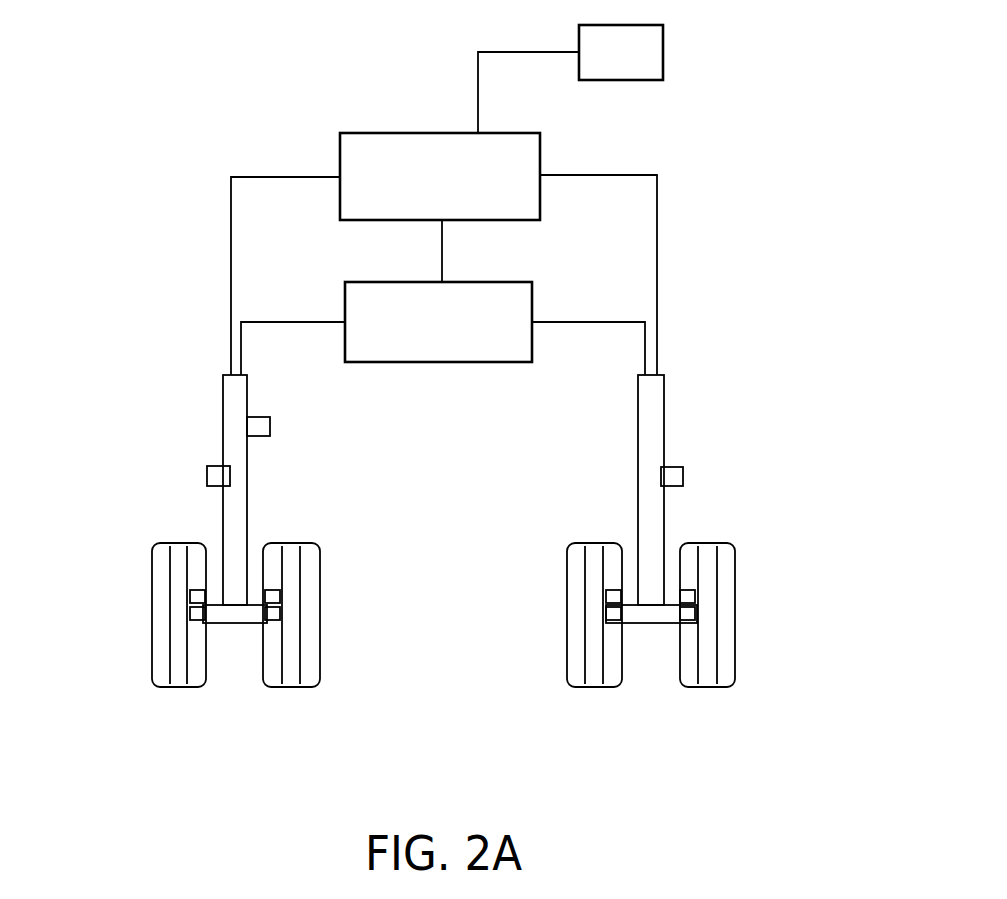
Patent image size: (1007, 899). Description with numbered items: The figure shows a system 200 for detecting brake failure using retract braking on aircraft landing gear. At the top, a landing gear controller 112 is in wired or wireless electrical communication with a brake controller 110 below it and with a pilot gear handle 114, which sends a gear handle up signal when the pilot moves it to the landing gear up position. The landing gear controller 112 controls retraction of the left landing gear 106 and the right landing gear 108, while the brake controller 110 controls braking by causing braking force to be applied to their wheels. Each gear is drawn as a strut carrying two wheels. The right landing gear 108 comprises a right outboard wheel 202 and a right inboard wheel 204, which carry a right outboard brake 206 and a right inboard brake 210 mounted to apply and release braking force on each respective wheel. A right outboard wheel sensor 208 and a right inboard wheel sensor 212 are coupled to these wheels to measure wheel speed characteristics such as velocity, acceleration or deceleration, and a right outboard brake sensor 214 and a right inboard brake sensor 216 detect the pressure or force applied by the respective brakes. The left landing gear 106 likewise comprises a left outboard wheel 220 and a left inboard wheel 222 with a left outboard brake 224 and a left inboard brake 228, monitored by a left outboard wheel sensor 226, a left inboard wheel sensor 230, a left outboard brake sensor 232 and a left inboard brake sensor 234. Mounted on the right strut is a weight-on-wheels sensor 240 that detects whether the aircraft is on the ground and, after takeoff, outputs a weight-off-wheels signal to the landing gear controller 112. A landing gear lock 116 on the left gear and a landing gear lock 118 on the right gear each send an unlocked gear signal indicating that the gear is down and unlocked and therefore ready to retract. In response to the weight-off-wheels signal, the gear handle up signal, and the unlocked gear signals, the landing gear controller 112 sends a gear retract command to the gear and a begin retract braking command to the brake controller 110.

The system 200 is at (228, 82).
The pilot gear handle 114 is at (621, 52).
The landing gear controller 112 is at (385, 134).
The brake controller 110 is at (448, 363).
The right landing gear 108 is at (104, 427).
The left landing gear 106 is at (793, 411).
The landing gear lock 118 is at (212, 476).
The landing gear lock 116 is at (683, 478).
The weight-on-wheels sensor 240 is at (270, 428).
The right outboard wheel 202 is at (152, 682).
The right inboard wheel 204 is at (320, 682).
The right outboard brake 206 is at (208, 623).
The right inboard brake 210 is at (262, 623).
The right outboard wheel sensor 208 is at (190, 597).
The right inboard wheel sensor 212 is at (282, 597).
The right outboard brake sensor 214 is at (190, 613).
The right inboard brake sensor 216 is at (280, 613).
The left outboard wheel 220 is at (735, 682).
The left inboard wheel 222 is at (567, 682).
The left inboard brake 228 is at (622, 623).
The left outboard brake 224 is at (672, 623).
The left outboard wheel sensor 226 is at (695, 597).
The left inboard wheel sensor 230 is at (606, 597).
The left outboard brake sensor 232 is at (695, 613).
The left inboard brake sensor 234 is at (606, 613).